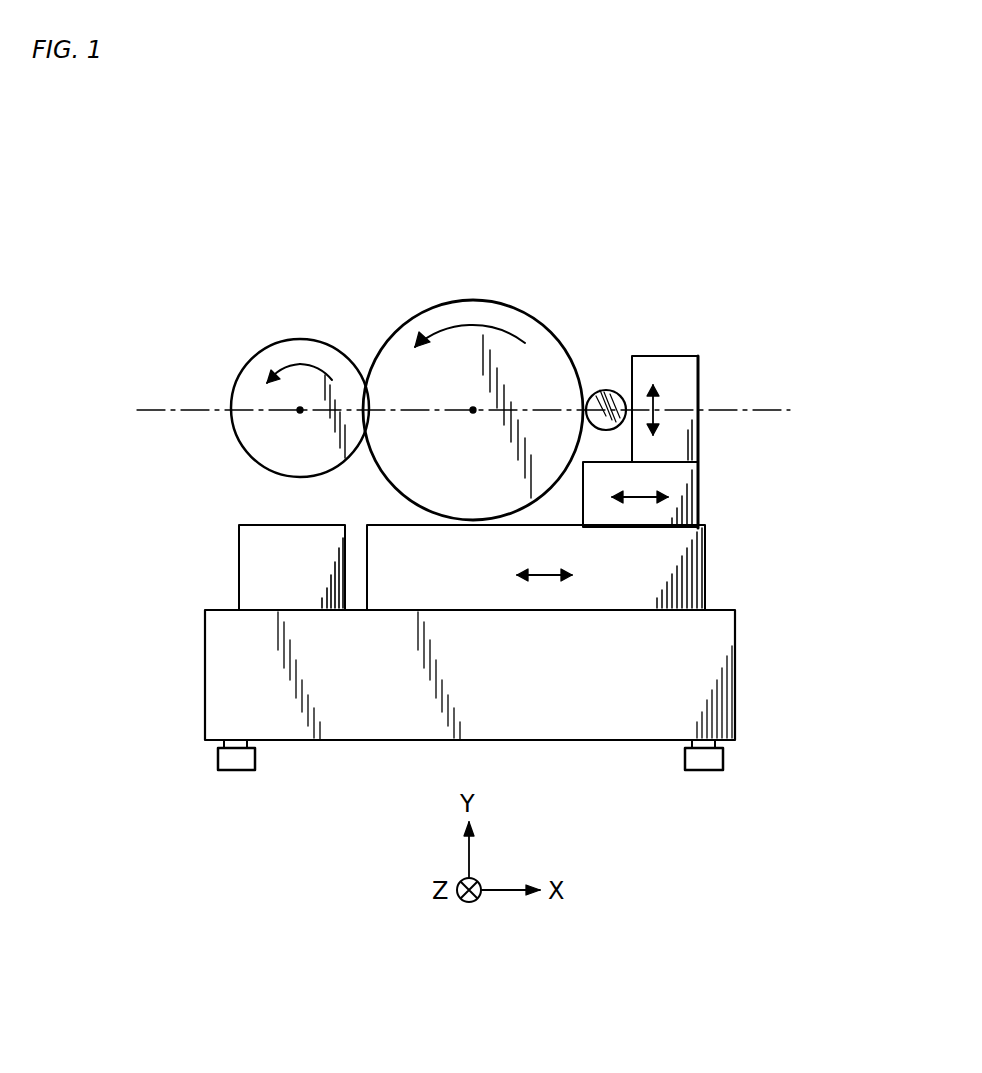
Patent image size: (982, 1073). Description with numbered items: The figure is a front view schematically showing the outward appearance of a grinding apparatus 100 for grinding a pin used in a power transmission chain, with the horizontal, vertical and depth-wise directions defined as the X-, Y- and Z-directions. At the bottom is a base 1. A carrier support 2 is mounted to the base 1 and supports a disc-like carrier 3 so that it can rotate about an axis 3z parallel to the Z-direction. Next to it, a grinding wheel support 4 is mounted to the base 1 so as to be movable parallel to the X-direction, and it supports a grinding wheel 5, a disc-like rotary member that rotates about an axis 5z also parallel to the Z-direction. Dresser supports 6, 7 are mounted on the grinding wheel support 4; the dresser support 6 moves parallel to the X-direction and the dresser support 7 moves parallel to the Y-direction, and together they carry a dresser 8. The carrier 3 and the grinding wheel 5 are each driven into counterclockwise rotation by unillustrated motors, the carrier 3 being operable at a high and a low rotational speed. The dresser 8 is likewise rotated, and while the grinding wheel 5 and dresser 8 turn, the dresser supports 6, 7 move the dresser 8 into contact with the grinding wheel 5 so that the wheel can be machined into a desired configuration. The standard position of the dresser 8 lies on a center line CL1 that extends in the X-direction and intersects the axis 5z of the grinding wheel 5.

The grinding apparatus 100 is at (343, 288).
The base 1 is at (710, 680).
The carrier support 2 is at (256, 563).
The carrier 3 is at (245, 368).
The axis 3z is at (300, 412).
The grinding wheel support 4 is at (705, 570).
The grinding wheel 5 is at (541, 322).
The axis 5z is at (470, 411).
The dresser support 6 is at (700, 495).
The dresser support 7 is at (672, 356).
The dresser 8 is at (606, 390).
The center line CL1 is at (755, 407).